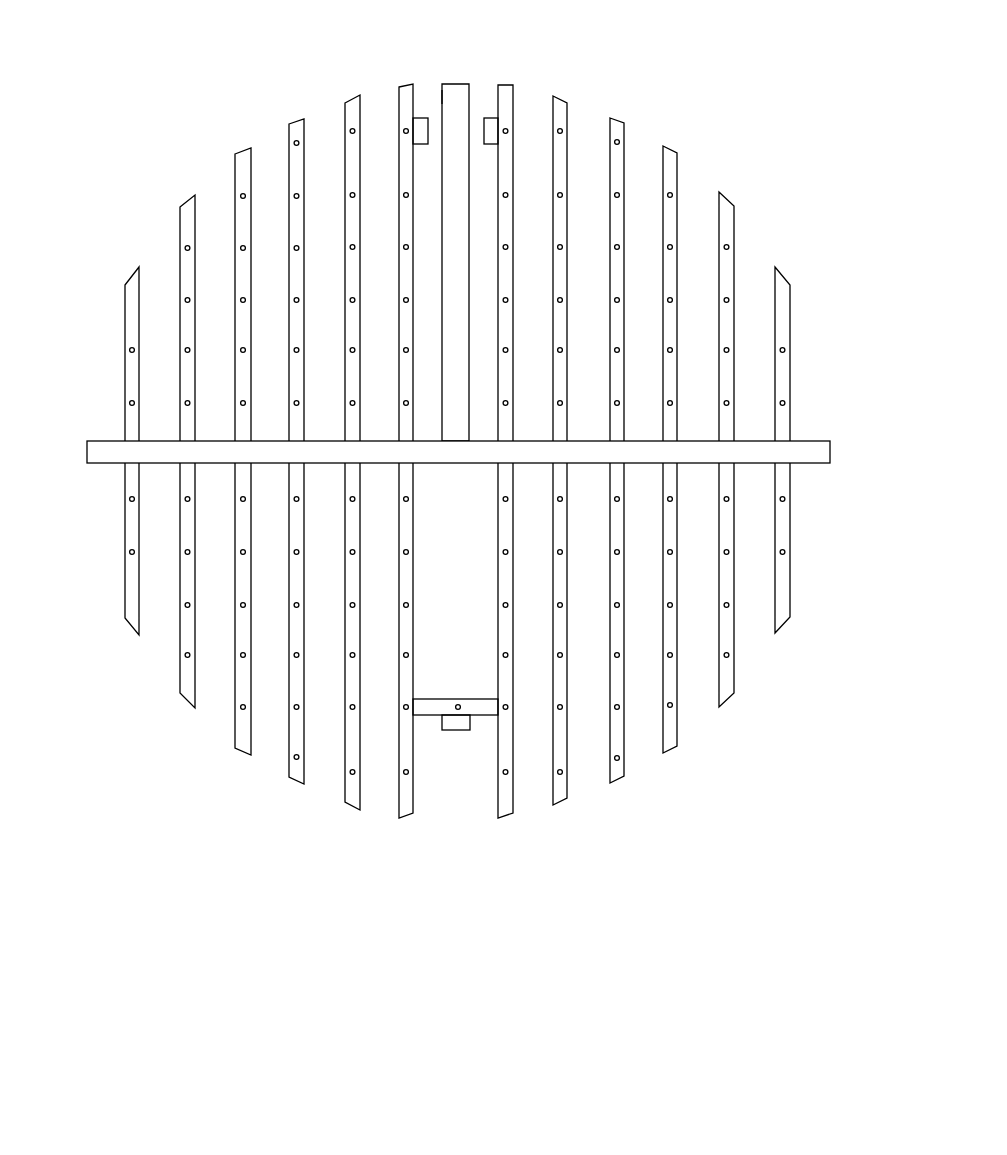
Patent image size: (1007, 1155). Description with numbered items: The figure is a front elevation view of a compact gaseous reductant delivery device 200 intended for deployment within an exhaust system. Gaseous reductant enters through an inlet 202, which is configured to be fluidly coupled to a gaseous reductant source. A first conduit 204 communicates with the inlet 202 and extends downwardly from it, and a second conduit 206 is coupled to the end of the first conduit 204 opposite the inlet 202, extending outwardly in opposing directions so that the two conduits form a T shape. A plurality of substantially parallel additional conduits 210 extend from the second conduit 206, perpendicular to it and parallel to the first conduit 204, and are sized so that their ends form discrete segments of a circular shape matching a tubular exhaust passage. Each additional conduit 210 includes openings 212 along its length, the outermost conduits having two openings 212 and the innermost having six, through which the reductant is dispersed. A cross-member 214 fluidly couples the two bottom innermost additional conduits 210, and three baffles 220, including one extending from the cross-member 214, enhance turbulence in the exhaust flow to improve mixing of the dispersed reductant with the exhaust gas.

The gaseous reductant delivery device 200 is at (797, 76).
The inlet 202 is at (452, 64).
The first conduit 204 is at (442, 97).
The second conduit 206 is at (87, 452).
The additional conduits 210 is at (235, 153).
The openings 212 is at (672, 195).
The cross-member 214 is at (478, 699).
The baffles 220 is at (428, 127).